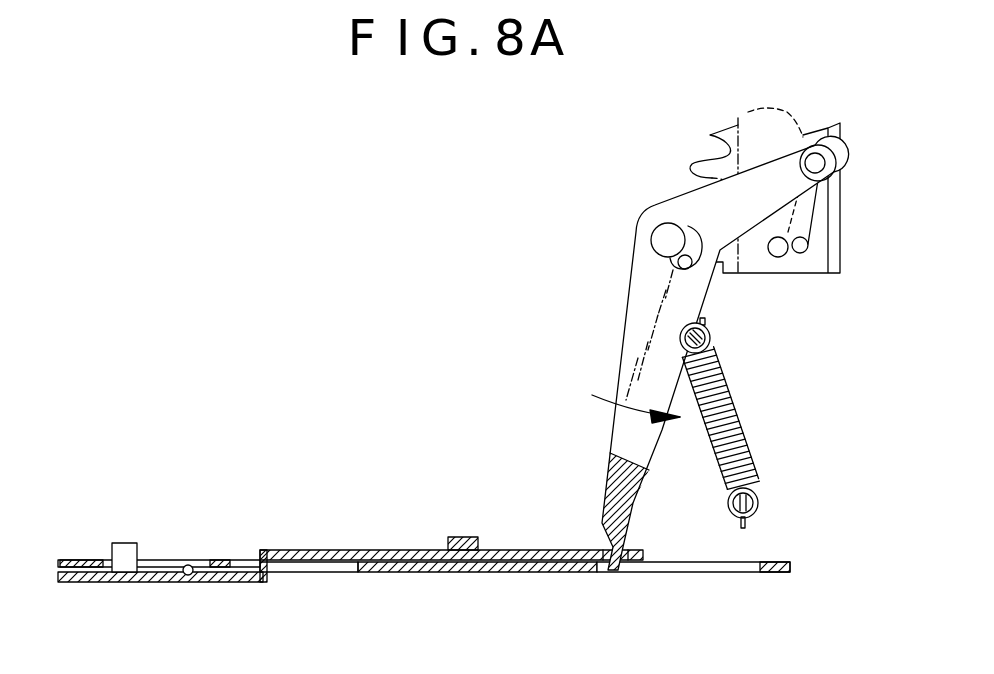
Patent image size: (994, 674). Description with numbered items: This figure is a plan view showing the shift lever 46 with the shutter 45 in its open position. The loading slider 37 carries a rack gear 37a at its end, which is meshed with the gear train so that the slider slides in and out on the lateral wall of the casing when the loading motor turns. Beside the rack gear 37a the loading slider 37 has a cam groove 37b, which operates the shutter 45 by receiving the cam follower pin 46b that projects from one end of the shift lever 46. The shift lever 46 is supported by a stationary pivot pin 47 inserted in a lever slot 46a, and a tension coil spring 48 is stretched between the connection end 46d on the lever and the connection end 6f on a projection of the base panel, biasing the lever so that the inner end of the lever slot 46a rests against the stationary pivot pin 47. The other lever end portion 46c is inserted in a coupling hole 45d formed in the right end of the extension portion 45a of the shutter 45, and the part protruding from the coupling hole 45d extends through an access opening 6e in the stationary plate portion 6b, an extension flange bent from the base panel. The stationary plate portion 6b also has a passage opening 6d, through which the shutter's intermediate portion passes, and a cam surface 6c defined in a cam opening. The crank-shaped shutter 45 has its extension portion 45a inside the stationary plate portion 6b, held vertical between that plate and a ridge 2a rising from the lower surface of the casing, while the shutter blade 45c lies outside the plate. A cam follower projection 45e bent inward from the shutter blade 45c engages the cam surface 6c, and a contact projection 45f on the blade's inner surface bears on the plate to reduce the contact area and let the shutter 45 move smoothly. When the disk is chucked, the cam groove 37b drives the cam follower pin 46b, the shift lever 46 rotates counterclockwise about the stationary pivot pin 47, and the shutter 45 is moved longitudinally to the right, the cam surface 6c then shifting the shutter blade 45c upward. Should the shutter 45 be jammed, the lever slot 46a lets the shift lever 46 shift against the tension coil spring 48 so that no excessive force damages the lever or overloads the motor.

The loading slider 37 is at (719, 211).
The rack gear 37a is at (700, 166).
The cam groove 37b is at (790, 253).
The shift lever 46 is at (693, 390).
The lever slot 46a is at (687, 264).
The cam follower pin 46b is at (817, 168).
The lever end portion 46c is at (613, 573).
The connection end 46d is at (703, 335).
The stationary pivot pin 47 is at (672, 243).
The tension coil spring 48 is at (740, 423).
The stationary plate portion 6b is at (468, 573).
The cam surface 6c is at (163, 560).
The passage opening 6d is at (298, 573).
The access opening 6e is at (753, 572).
The connection end 6f is at (748, 522).
The shutter 45 is at (387, 548).
The extension portion 45a is at (523, 550).
The shutter blade 45c is at (86, 583).
The coupling hole 45d is at (627, 572).
The cam follower projection 45e is at (124, 543).
The contact projection 45f is at (188, 576).
The ridge 2a is at (457, 537).